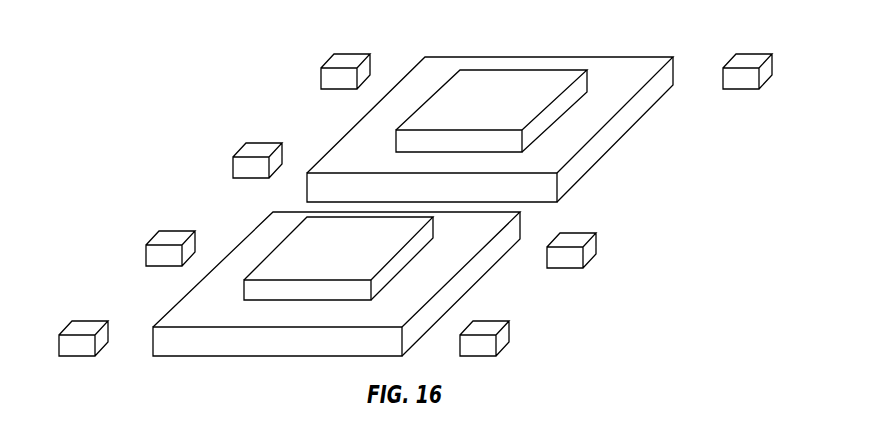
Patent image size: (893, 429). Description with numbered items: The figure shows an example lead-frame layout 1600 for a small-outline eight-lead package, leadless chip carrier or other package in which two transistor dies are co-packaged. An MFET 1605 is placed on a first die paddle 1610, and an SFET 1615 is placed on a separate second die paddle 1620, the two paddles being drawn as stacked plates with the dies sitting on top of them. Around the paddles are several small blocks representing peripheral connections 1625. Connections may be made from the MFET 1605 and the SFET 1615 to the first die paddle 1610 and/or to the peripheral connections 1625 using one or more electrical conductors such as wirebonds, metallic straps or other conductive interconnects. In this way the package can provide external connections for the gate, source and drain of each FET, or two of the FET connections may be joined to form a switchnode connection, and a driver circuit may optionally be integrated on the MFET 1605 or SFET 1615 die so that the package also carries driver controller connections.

The lead-frame layout 1600 is at (133, 153).
The MFET 1605 is at (510, 111).
The first die paddle 1610 is at (613, 132).
The SFET 1615 is at (357, 258).
The second die paddle 1620 is at (465, 278).
The peripheral connections 1625 is at (744, 62).